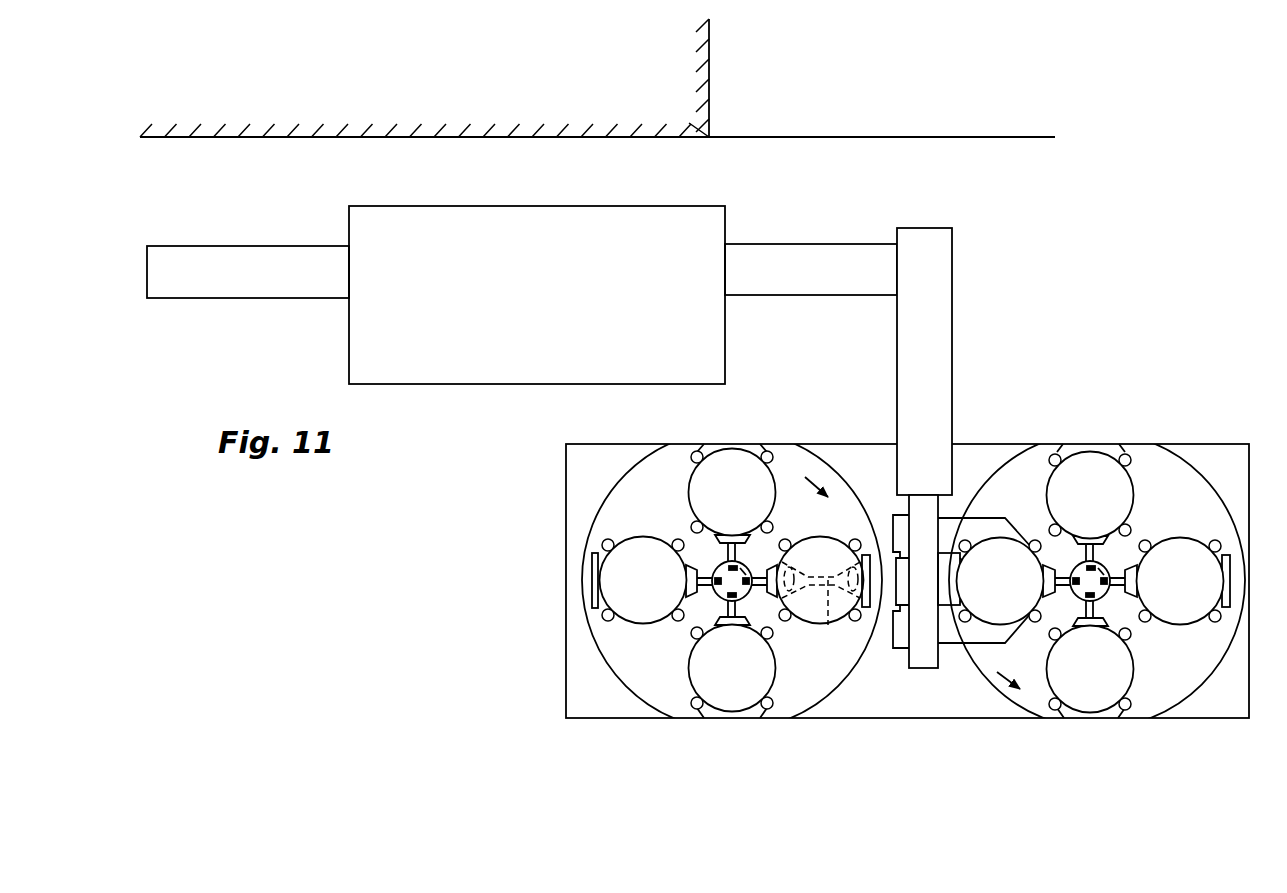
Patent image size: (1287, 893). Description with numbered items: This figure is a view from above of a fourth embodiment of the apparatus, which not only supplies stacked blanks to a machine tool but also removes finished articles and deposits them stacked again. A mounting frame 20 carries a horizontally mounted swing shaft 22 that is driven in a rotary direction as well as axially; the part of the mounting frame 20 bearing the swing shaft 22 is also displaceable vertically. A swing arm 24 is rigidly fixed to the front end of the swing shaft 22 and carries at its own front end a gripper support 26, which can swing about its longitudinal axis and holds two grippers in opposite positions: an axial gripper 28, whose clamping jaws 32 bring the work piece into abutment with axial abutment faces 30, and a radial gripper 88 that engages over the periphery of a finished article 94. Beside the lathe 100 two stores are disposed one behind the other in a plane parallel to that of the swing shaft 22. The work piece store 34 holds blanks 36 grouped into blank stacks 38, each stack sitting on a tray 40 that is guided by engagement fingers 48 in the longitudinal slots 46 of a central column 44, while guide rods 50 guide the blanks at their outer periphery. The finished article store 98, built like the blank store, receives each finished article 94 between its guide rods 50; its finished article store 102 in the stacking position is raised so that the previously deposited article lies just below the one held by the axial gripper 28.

The lathe 100 is at (712, 85).
The mounting frame 20 is at (484, 216).
The swing shaft 22 is at (810, 259).
The swing arm 24 is at (953, 355).
The gripper support 26 is at (928, 660).
The axial gripper 28 is at (888, 589).
The axial abutment faces 30 is at (900, 581).
The clamping jaws 32 is at (893, 520).
The work piece store 34 is at (777, 444).
The blanks 36 is at (648, 563).
The blank stacks 38 is at (723, 560).
The tray 40 is at (597, 562).
The central column 44 is at (723, 571).
The longitudinal slots 46 is at (741, 571).
The engagement fingers 48 is at (738, 604).
The guide rods 50 is at (767, 451).
The radial gripper 88 is at (971, 522).
The finished article 94 is at (1120, 500).
The finished article store 98 is at (1067, 714).
The finished article store 102 is at (1162, 623).